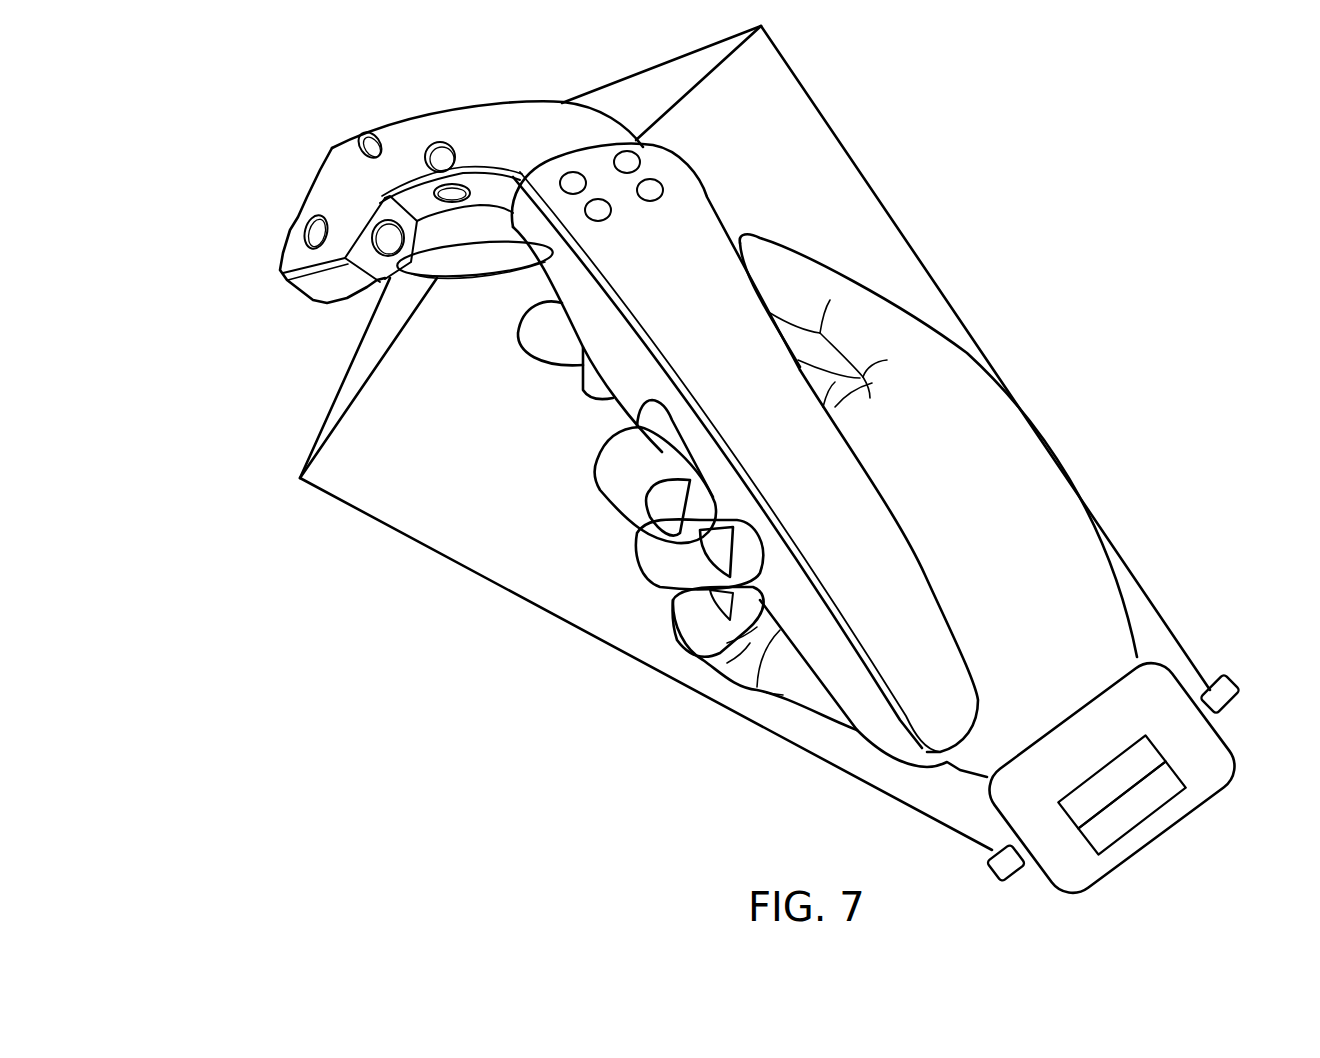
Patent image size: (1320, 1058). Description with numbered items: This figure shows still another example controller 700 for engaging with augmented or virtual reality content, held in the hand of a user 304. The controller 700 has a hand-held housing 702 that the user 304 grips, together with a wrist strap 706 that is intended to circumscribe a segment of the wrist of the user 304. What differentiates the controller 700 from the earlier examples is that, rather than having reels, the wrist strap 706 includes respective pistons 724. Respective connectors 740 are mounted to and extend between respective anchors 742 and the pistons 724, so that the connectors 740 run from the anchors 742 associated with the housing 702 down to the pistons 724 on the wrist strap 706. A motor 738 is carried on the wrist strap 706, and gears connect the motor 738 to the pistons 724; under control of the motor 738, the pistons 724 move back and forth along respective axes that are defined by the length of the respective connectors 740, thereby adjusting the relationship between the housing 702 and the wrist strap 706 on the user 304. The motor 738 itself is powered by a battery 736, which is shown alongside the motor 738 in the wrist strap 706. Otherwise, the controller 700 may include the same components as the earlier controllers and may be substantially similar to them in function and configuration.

The controller 700 is at (275, 100).
The housing 702 is at (677, 178).
The user 304 is at (1010, 548).
The connectors 740 is at (893, 210).
The anchors 742 is at (657, 67).
The wrist strap 706 is at (1103, 873).
The motor 738 is at (1103, 767).
The battery 736 is at (1157, 817).
The pistons 724 is at (1233, 687).